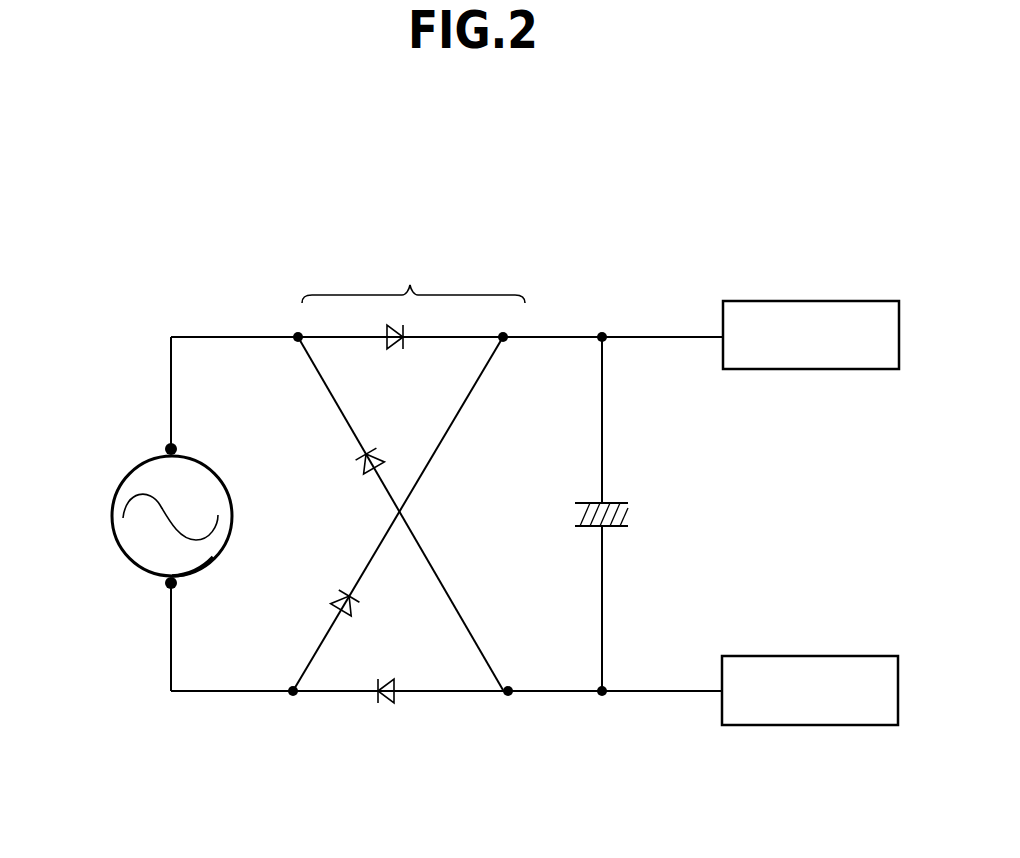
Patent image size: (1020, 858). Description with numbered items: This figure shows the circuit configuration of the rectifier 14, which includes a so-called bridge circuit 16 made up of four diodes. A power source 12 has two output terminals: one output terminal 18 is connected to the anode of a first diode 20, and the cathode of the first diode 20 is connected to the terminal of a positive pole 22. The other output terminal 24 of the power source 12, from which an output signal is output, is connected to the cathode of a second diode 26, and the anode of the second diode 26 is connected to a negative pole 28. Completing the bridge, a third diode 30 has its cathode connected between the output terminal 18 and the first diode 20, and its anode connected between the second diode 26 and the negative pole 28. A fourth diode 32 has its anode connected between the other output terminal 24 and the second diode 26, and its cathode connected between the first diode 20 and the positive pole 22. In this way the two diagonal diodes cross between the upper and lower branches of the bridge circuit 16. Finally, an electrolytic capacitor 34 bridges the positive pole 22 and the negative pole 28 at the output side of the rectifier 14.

The power source 12 is at (114, 537).
The rectifier 14 is at (637, 292).
The bridge circuit 16 is at (413, 278).
The output terminal 18 is at (167, 447).
The first diode 20 is at (397, 351).
The positive pole 22 is at (838, 300).
The other output terminal 24 is at (164, 585).
The second diode 26 is at (388, 704).
The negative pole 28 is at (837, 656).
The third diode 30 is at (366, 468).
The fourth diode 32 is at (352, 612).
The electrolytic capacitor 34 is at (624, 503).